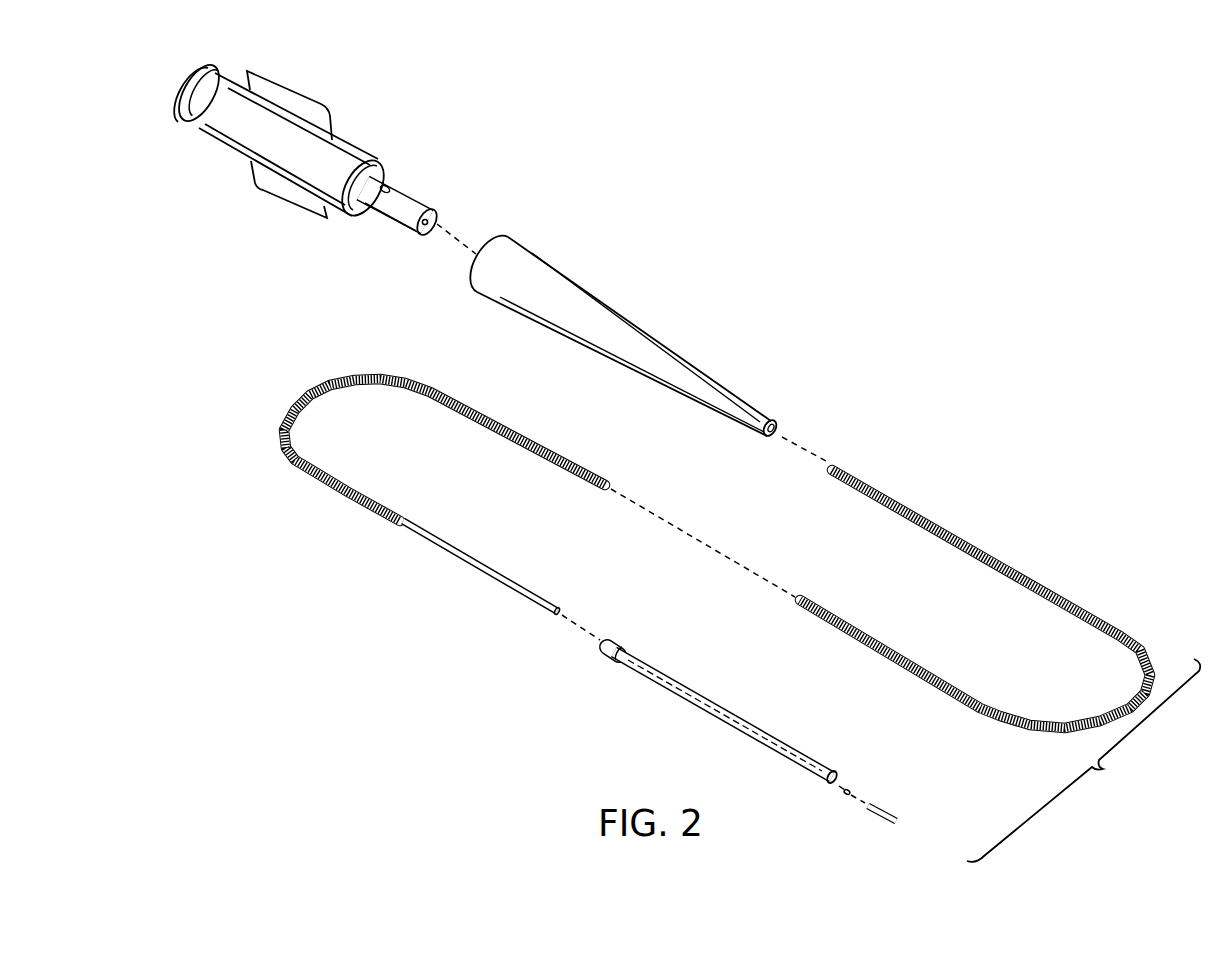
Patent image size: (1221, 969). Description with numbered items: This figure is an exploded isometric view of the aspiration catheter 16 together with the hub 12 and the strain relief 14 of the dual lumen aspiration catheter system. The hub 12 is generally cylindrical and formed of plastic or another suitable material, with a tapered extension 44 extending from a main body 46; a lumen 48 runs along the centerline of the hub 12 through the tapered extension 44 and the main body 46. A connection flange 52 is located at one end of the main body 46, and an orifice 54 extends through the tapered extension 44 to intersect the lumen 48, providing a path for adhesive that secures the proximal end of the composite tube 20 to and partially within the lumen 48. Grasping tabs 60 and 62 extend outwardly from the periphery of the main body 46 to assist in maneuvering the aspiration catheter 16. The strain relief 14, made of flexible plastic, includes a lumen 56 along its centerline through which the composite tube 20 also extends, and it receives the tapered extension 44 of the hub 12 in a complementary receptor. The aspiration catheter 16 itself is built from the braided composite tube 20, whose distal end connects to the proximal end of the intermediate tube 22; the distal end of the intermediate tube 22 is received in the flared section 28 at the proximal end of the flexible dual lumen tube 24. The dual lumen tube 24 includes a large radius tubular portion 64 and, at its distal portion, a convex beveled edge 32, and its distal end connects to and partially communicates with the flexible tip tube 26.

The hub 12 is at (326, 155).
The strain relief 14 is at (653, 337).
The aspiration catheter 16 is at (1083, 760).
The composite tube 20 is at (1018, 572).
The intermediate tube 22 is at (493, 573).
The dual lumen tube 24 is at (747, 702).
The flexible tip tube 26 is at (885, 812).
The flared section 28 is at (613, 640).
The convex beveled edge 32 is at (840, 778).
The tapered extension 44 is at (391, 227).
The main body 46 is at (361, 158).
The lumen 48 is at (436, 218).
The connection flange 52 is at (195, 122).
The orifice 54 is at (390, 187).
The lumen 56 is at (777, 425).
The grasping tab 60 is at (290, 98).
The grasping tab 62 is at (277, 187).
The large radius tubular portion 64 is at (750, 725).